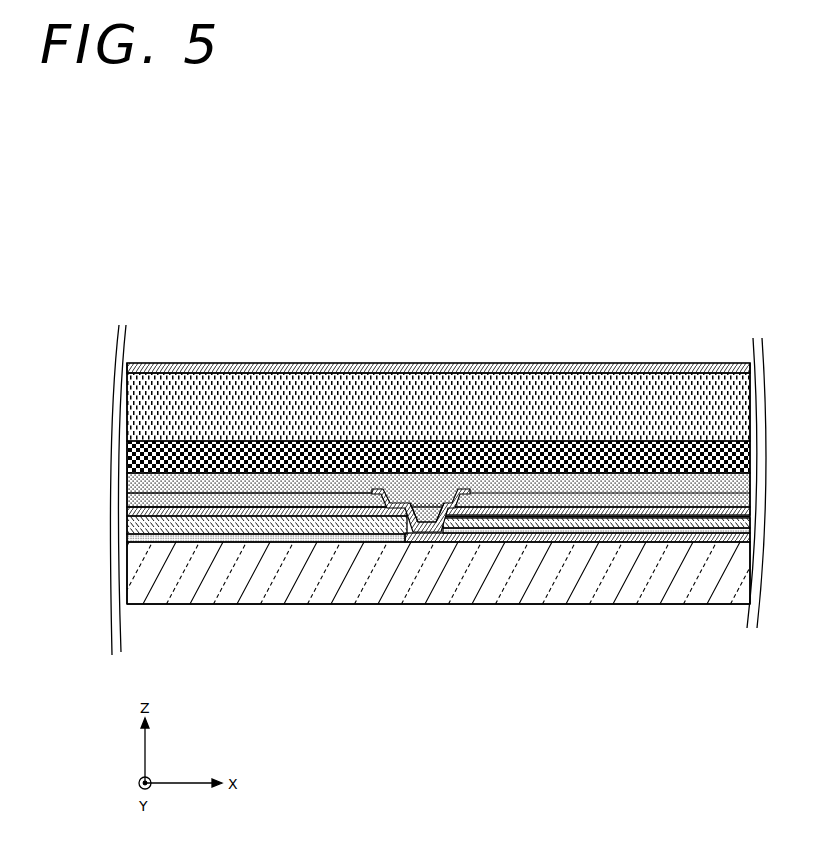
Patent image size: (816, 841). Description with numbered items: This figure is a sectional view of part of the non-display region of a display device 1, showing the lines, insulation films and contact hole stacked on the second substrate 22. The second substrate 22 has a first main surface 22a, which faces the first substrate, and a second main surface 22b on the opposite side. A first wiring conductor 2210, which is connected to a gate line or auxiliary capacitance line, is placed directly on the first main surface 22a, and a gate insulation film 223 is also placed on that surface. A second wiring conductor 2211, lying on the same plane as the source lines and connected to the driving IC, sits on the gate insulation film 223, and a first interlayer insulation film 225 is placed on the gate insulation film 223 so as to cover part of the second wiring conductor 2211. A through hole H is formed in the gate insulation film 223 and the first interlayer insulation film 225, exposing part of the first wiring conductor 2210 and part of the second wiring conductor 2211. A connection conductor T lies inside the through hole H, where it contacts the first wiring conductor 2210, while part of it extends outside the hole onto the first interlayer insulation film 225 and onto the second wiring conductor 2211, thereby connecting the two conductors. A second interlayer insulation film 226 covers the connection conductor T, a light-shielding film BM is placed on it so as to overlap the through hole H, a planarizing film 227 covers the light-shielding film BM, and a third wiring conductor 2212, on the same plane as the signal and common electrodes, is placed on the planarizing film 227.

The display device 1 is at (370, 160).
The second substrate 22 is at (443, 590).
The first main surface 22a is at (246, 538).
The second main surface 22b is at (348, 604).
The gate insulation film 223 is at (178, 532).
The first interlayer insulation film 225 is at (527, 503).
The second interlayer insulation film 226 is at (683, 482).
The planarizing film 227 is at (508, 430).
The first wiring conductor 2210 is at (618, 535).
The second wiring conductor 2211 is at (327, 500).
The third wiring conductor 2212 is at (237, 363).
The light-shielding film BM is at (600, 441).
The through hole H is at (422, 505).
The connection conductor T is at (458, 505).